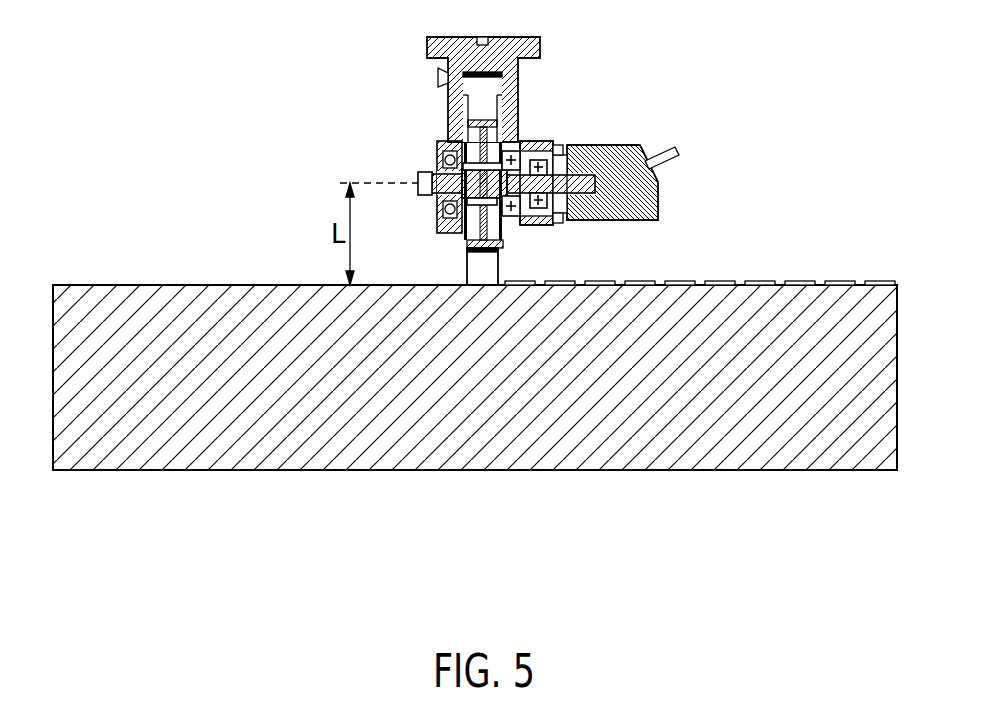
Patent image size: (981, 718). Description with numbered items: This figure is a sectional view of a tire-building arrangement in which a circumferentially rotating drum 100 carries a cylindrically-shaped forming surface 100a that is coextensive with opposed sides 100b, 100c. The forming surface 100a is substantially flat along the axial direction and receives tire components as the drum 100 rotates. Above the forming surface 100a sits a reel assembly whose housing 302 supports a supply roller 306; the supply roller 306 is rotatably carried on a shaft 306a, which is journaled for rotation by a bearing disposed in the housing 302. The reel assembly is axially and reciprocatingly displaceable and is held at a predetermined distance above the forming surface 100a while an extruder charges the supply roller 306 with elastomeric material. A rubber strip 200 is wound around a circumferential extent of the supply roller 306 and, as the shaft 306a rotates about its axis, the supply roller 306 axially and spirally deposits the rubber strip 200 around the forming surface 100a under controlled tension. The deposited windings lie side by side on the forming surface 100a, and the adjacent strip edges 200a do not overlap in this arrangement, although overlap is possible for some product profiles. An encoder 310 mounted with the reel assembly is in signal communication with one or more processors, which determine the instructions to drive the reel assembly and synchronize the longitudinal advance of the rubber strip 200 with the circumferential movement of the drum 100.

The drum 100 is at (114, 252).
The forming surface 100a is at (238, 285).
The side 100b is at (53, 410).
The side 100c is at (897, 408).
The rubber strip 200 is at (485, 268).
The strip edges 200a is at (697, 283).
The housing 302 is at (518, 90).
The supply roller 306 is at (502, 128).
The shaft 306a is at (442, 170).
The encoder 310 is at (640, 162).